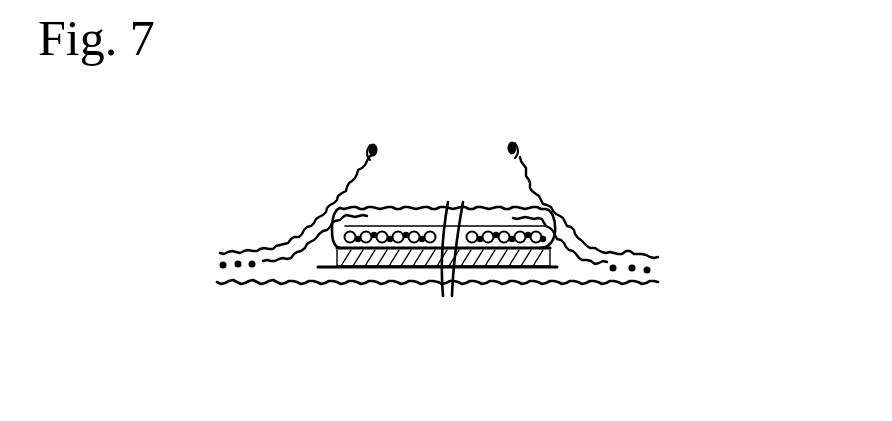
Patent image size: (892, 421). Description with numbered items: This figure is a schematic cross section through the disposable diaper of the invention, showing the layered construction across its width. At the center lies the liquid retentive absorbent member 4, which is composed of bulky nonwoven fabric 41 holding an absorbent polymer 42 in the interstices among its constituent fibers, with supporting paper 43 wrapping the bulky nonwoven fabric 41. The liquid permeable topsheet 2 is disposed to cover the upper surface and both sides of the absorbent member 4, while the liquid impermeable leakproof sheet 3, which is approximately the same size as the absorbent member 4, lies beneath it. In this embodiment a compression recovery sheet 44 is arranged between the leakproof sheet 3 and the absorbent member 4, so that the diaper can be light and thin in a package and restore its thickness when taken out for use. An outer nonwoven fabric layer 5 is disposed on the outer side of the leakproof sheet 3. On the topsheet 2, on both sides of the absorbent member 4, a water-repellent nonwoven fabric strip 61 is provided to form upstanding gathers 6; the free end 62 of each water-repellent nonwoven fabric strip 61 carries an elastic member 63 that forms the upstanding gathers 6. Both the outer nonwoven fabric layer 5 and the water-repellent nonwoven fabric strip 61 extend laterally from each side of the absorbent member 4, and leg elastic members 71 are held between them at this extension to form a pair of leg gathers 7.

The topsheet 2 is at (446, 200).
The leakproof sheet 3 is at (337, 250).
The absorbent member 4 is at (437, 315).
The bulky nonwoven fabric 41 is at (387, 249).
The absorbent polymer 42 is at (420, 269).
The supporting paper 43 is at (472, 249).
The compression recovery sheet 44 is at (509, 308).
The outer nonwoven fabric layer 5 is at (272, 284).
The upstanding gathers 6 is at (343, 75).
The water-repellent nonwoven fabric strip 61 is at (340, 190).
The free end 62 is at (375, 152).
The elastic member 63 is at (368, 149).
The leg gathers 7 is at (243, 251).
The leg elastic members 71 is at (228, 273).